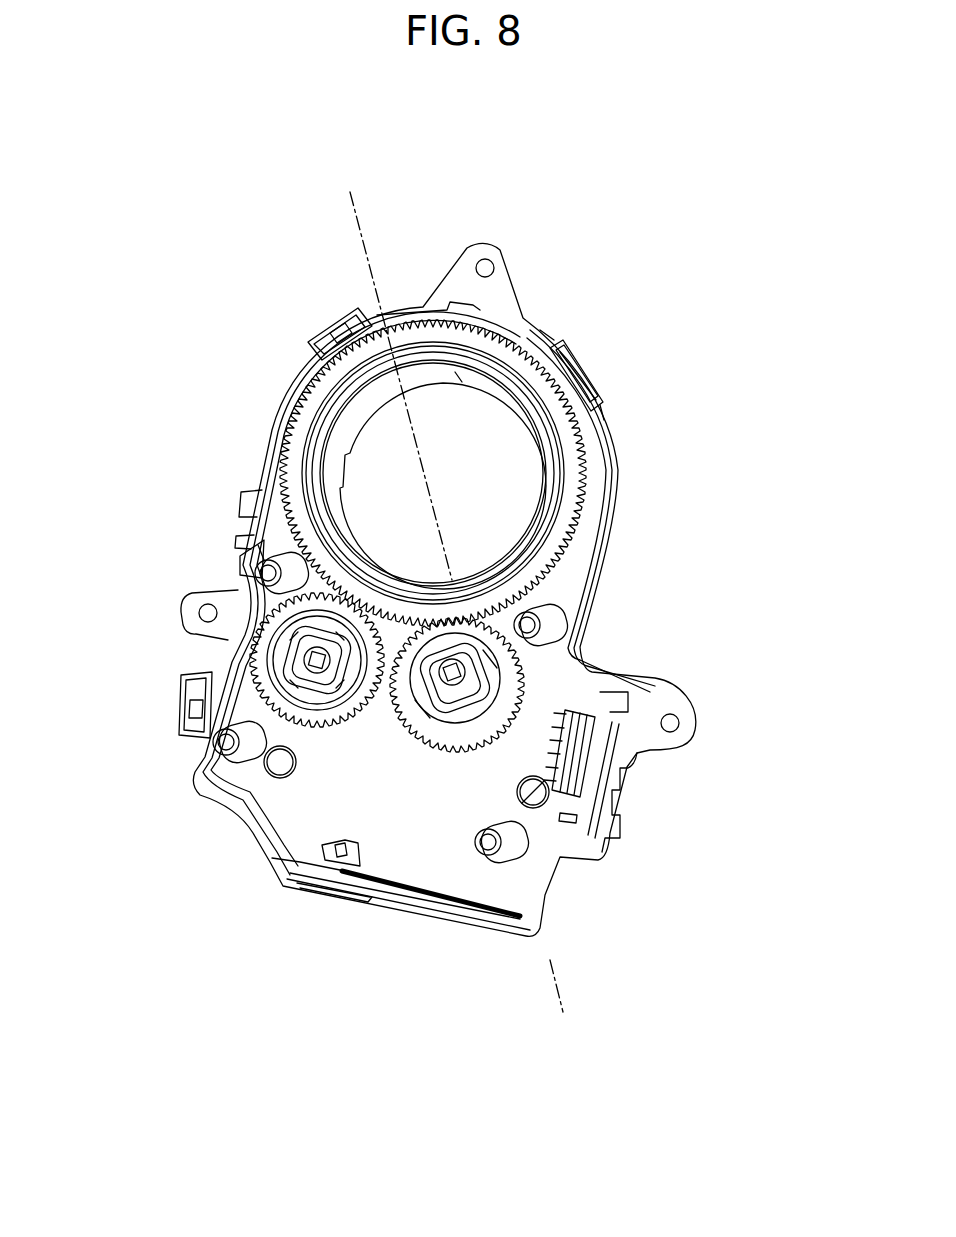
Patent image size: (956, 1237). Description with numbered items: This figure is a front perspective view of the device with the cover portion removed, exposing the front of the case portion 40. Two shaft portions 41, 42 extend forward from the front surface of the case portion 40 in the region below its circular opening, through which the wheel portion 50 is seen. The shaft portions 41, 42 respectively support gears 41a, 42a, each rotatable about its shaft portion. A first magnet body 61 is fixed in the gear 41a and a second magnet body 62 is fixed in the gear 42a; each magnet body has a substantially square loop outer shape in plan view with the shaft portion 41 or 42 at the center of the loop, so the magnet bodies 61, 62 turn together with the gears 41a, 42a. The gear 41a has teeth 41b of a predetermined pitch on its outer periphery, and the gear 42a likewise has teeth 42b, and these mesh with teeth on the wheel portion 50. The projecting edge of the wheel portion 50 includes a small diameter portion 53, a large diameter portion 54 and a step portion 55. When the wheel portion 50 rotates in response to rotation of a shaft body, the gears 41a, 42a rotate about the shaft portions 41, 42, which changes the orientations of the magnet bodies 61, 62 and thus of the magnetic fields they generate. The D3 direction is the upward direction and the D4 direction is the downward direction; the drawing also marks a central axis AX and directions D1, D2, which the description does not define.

The case portion 40 is at (272, 798).
The shaft portion 41 is at (316, 665).
The gear 41a is at (262, 672).
The teeth 41b is at (343, 722).
The shaft portion 42 is at (452, 680).
The gear 42a is at (484, 712).
The teeth 42b is at (413, 727).
The wheel portion 50 is at (560, 490).
The small diameter portion 53 is at (548, 420).
The large diameter portion 54 is at (528, 378).
The step portion 55 is at (410, 400).
The first magnet body 61 is at (297, 640).
The second magnet body 62 is at (425, 668).
The optical axis AX is at (354, 212).
The direction D1 is at (345, 255).
The direction D2 is at (523, 972).
The D3 direction D3 is at (760, 565).
The D4 direction D4 is at (713, 860).